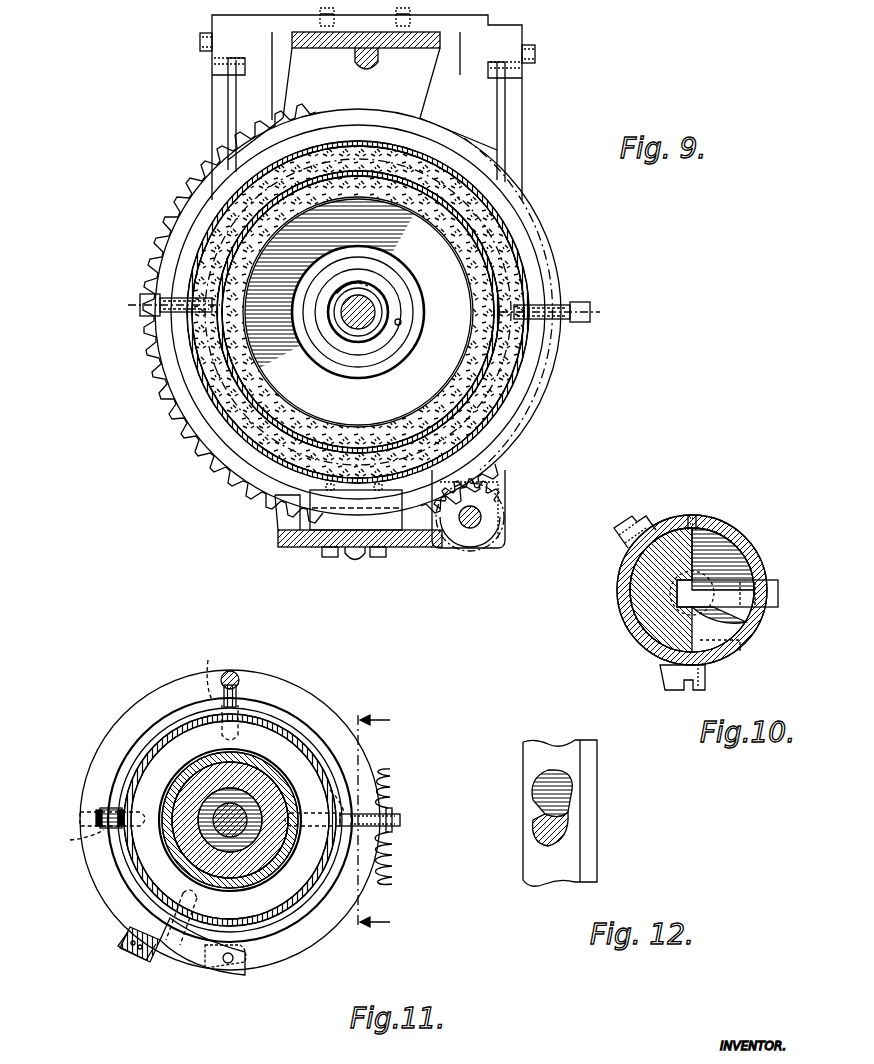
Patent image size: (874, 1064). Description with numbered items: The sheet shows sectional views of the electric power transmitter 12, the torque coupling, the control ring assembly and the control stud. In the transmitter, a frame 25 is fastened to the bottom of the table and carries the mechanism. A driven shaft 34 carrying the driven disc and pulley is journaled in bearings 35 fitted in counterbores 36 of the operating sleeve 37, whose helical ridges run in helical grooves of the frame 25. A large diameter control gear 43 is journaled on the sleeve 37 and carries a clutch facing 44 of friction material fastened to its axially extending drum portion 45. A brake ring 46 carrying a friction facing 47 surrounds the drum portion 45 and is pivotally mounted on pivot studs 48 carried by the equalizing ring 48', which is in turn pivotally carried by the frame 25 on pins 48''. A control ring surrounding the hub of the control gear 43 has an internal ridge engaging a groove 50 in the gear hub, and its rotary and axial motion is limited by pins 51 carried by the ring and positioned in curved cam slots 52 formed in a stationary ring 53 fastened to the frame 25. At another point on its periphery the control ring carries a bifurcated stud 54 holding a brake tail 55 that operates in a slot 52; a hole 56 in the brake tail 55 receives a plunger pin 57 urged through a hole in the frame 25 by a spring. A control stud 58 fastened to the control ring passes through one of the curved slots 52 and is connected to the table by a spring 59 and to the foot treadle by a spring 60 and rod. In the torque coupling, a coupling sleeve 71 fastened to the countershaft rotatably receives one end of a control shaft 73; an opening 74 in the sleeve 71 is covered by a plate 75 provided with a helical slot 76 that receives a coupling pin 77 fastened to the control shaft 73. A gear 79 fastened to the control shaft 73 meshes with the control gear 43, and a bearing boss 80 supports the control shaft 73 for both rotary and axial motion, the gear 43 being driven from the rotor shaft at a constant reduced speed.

In FIG. 9, the electric power transmitter 12 is at (562, 262).
In FIG. 11, the electric power transmitter 12 is at (385, 822).
In FIG. 9, the frame 25 is at (292, 87).
In FIG. 9, the driven shaft 34 is at (352, 326).
In FIG. 11, the driven shaft 34 is at (240, 826).
In FIG. 9, the bearings 35 is at (384, 288).
In FIG. 9, the counterbores 36 is at (401, 322).
In FIG. 11, the operating sleeve 37 is at (236, 766).
In FIG. 9, the control gear 43 is at (168, 212).
In FIG. 9, the clutch facing 44 is at (414, 406).
In FIG. 9, the drum portion 45 is at (322, 414).
In FIG. 9, the brake ring 46 is at (490, 386).
In FIG. 9, the friction facing 47 is at (482, 410).
In FIG. 9, the pivot studs 48 is at (358, 324).
In FIG. 9, the equalizing ring 48' is at (364, 107).
In FIG. 9, the pins 48'' is at (369, 62).
In FIG. 11, the groove 50 is at (246, 876).
In FIG. 11, the pins 51 is at (240, 690).
In FIG. 11, the curved cam slots 52 is at (206, 660).
In FIG. 12, the curved cam slots 52 is at (573, 790).
In FIG. 11, the stationary ring 53 is at (318, 932).
In FIG. 12, the stationary ring 53 is at (530, 748).
In FIG. 11, the bifurcated stud 54 is at (130, 966).
In FIG. 11, the brake tail 55 is at (206, 968).
In FIG. 11, the hole 56 is at (232, 962).
In FIG. 11, the plunger pin 57 is at (226, 963).
In FIG. 11, the control stud 58 is at (400, 818).
In FIG. 12, the control stud 58 is at (560, 840).
In FIG. 11, the spring 59 is at (392, 786).
In FIG. 11, the spring 60 is at (400, 858).
In FIG. 10, the coupling sleeve 71 is at (632, 609).
In FIG. 9, the control shaft 73 is at (482, 518).
In FIG. 10, the opening 74 is at (676, 512).
In FIG. 10, the plate 75 is at (742, 545).
In FIG. 10, the helical slot 76 is at (694, 514).
In FIG. 10, the coupling pin 77 is at (776, 596).
In FIG. 9, the gear 79 is at (498, 500).
In FIG. 9, the bearing boss 80 is at (472, 548).